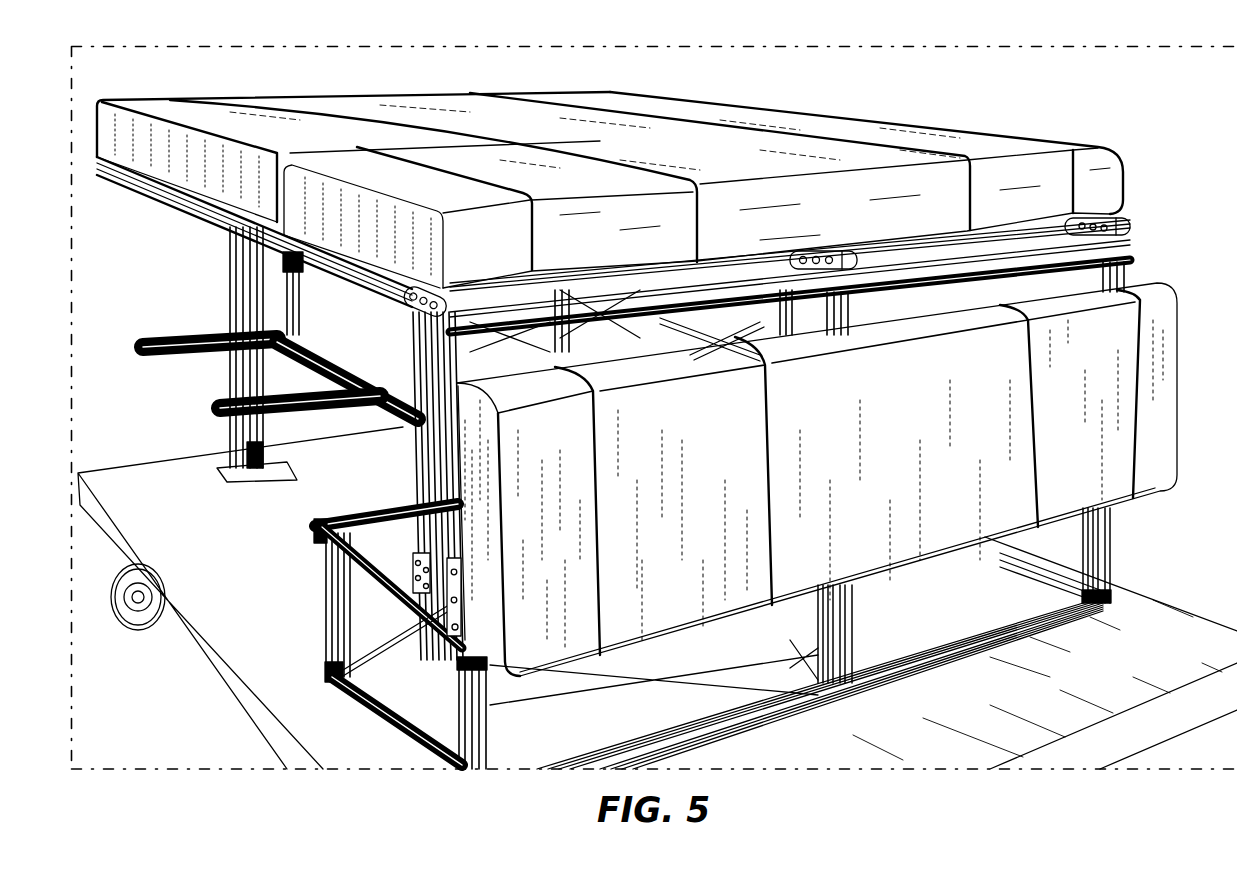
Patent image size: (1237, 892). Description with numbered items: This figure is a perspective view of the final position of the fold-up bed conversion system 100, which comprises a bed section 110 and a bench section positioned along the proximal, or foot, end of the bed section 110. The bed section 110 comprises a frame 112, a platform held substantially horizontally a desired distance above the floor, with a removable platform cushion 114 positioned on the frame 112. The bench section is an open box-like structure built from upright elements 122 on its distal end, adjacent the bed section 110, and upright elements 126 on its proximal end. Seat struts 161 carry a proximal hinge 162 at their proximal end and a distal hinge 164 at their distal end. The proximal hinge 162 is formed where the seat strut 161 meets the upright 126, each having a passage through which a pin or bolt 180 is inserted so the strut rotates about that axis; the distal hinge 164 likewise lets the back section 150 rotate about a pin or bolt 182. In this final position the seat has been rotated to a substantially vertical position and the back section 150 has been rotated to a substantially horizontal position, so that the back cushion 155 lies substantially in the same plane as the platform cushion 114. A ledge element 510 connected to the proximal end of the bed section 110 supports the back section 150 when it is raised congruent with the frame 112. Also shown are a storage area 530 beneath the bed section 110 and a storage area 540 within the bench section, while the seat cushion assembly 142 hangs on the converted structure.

The bed conversion system 100 is at (1116, 116).
The bed section 110 is at (177, 207).
The frame 112 is at (247, 198).
The platform cushion 114 is at (258, 200).
The upright elements 122 is at (320, 528).
The upright elements 126 is at (457, 703).
The seat cushion assembly 142 is at (930, 513).
The back section 150 is at (347, 273).
The back cushion 155 is at (413, 240).
The seat strut 161 is at (443, 538).
The proximal hinge 162 is at (455, 602).
The distal hinge 164 is at (445, 318).
The pin or bolt 180 is at (455, 627).
The pin or bolt 182 is at (416, 315).
The ledge element 510 is at (287, 267).
The storage area 530 is at (292, 462).
The storage area 540 is at (572, 683).